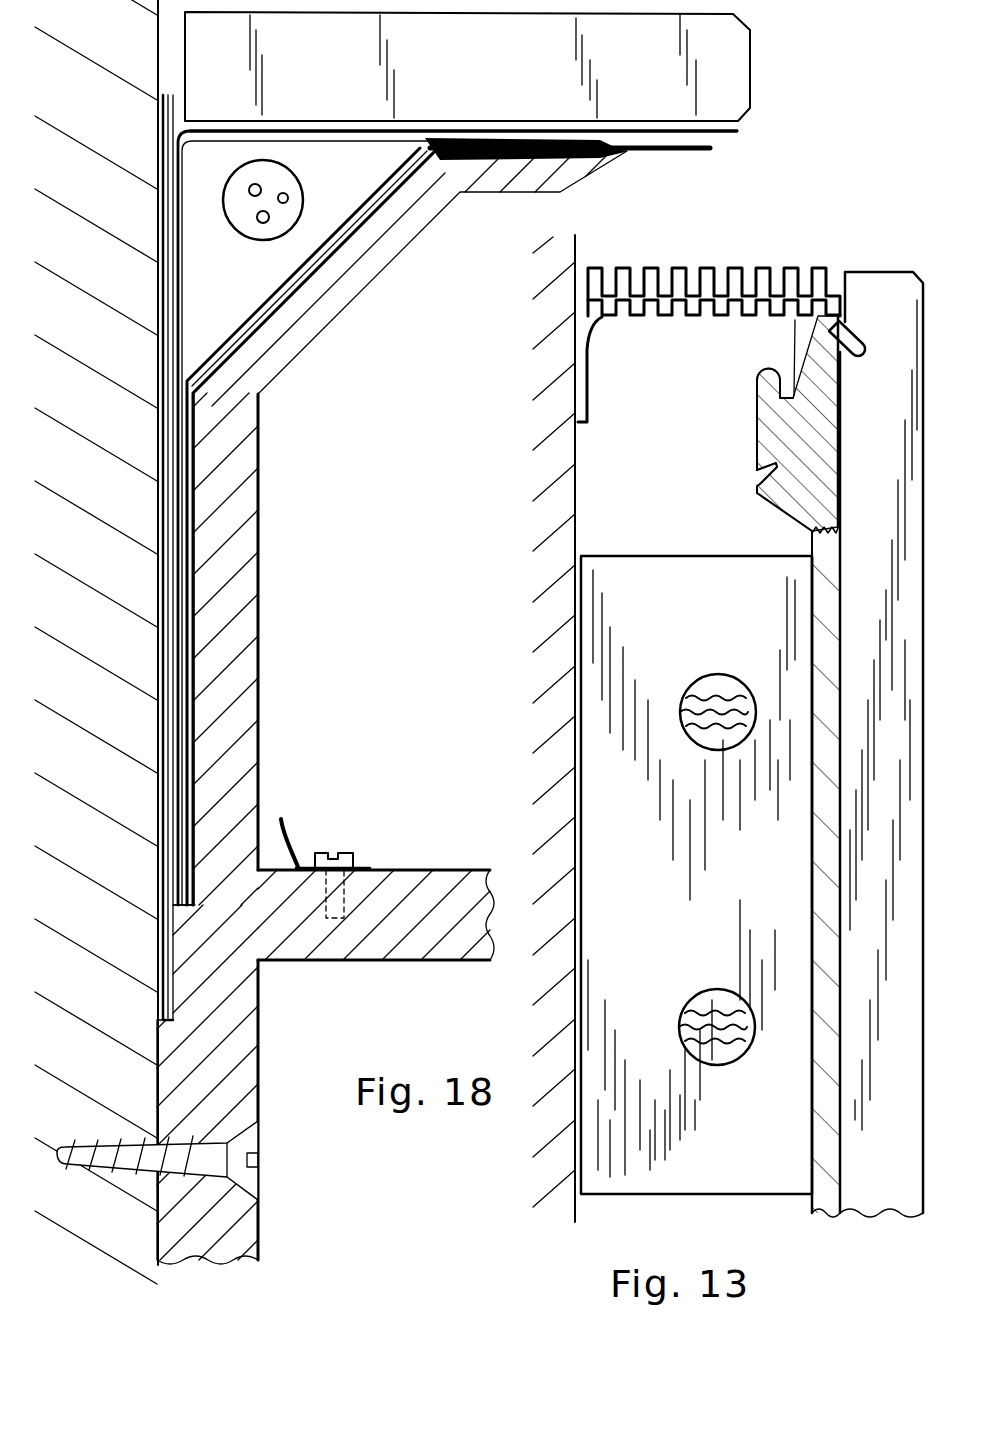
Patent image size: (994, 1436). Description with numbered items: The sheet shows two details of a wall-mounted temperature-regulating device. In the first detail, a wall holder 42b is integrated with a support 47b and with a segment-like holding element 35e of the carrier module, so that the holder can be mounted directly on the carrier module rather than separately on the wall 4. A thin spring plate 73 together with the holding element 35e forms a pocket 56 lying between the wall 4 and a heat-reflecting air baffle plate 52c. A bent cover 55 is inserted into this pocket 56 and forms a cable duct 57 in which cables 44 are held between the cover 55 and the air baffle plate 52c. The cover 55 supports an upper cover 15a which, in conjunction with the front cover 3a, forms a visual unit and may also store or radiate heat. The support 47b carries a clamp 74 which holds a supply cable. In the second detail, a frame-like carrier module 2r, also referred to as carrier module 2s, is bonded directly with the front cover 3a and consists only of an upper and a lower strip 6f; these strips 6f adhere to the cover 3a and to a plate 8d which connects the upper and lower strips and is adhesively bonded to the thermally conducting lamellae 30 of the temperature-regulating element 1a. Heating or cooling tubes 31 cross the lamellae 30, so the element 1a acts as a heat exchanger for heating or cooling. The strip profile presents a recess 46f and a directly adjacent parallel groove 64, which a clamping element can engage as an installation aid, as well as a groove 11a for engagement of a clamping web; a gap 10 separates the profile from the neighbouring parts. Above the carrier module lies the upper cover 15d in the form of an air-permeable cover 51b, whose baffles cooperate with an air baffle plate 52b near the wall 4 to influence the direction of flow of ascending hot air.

In FIG. 18, the upper cover 15a is at (471, 63).
In FIG. 18, the cable duct 57 is at (337, 167).
In FIG. 18, the air baffle plate 52c is at (377, 179).
In FIG. 18, the cables 44 is at (286, 222).
In FIG. 18, the bent cover 55 is at (180, 310).
In FIG. 18, the wall 4 is at (110, 507).
In FIG. 13, the wall 4 is at (551, 683).
In FIG. 18, the pocket 56 is at (198, 447).
In FIG. 18, the holding element 35e is at (262, 556).
In FIG. 18, the thin spring plate 73 is at (172, 727).
In FIG. 18, the clamp 74 is at (297, 830).
In FIG. 18, the support 47b is at (405, 940).
In FIG. 18, the wall holder 42b is at (222, 1210).
In FIG. 13, the upper cover 15d is at (714, 245).
In FIG. 13, the air-permeable cover 51b is at (733, 243).
In FIG. 13, the gap 10 is at (788, 345).
In FIG. 13, the groove 11a is at (862, 343).
In FIG. 13, the air baffle plate 52b is at (598, 336).
In FIG. 13, the recess 46f is at (757, 397).
In FIG. 13, the carrier module 2r is at (757, 430).
In FIG. 13, the strips 6f is at (757, 448).
In FIG. 13, the parallel groove 64 is at (750, 485).
In FIG. 13, the carrier module 2s is at (806, 541).
In FIG. 13, the temperature-regulating element 1a is at (609, 540).
In FIG. 13, the front cover 3a is at (901, 727).
In FIG. 13, the thermally conducting lamellae 30 is at (646, 813).
In FIG. 13, the pipes 31 is at (712, 990).
In FIG. 13, the plate 8d is at (808, 1204).